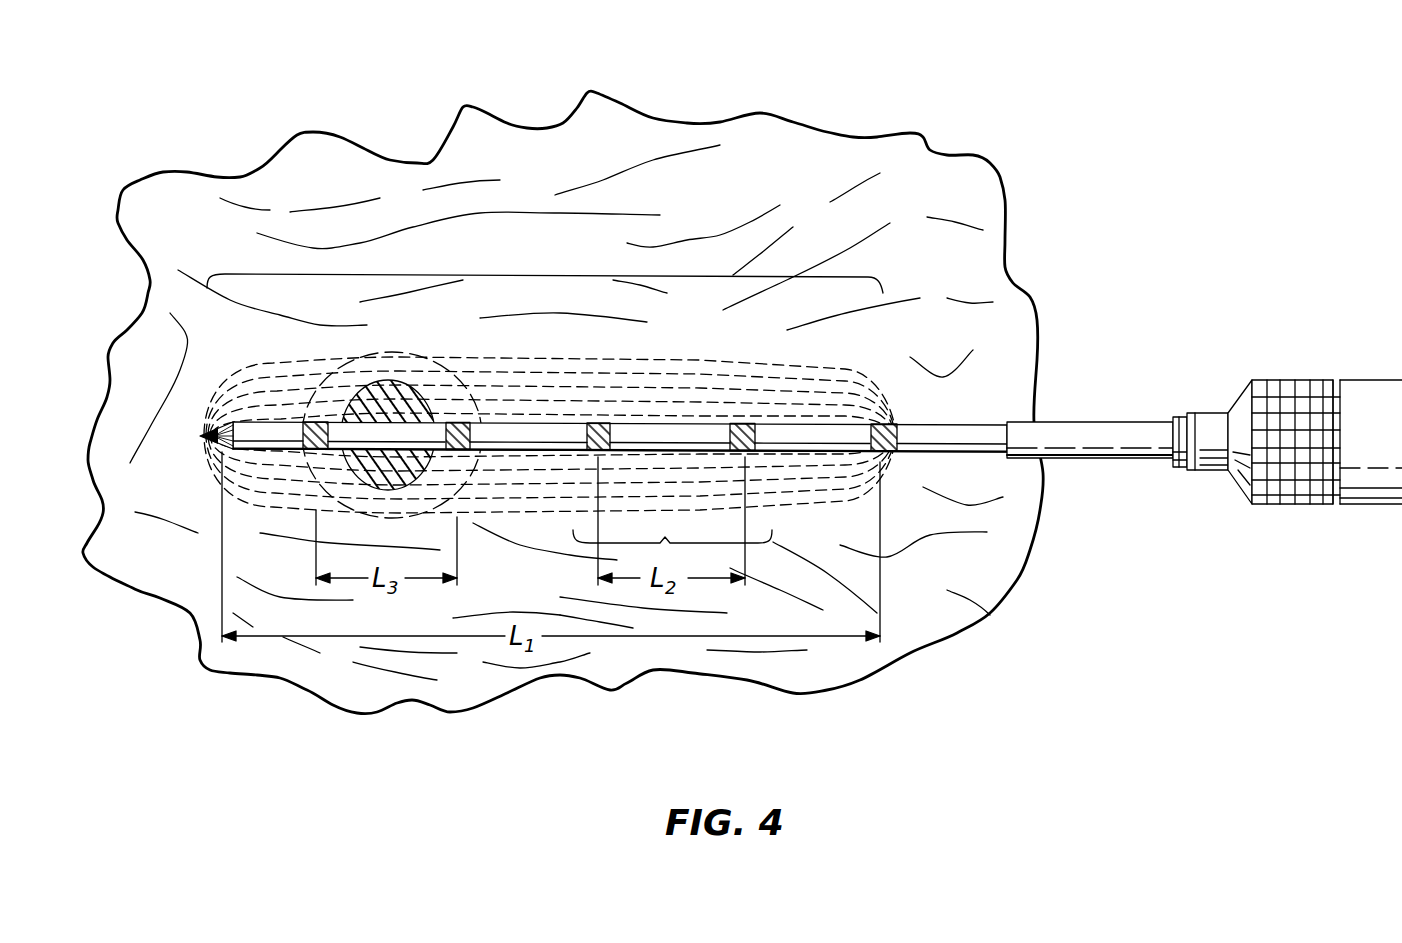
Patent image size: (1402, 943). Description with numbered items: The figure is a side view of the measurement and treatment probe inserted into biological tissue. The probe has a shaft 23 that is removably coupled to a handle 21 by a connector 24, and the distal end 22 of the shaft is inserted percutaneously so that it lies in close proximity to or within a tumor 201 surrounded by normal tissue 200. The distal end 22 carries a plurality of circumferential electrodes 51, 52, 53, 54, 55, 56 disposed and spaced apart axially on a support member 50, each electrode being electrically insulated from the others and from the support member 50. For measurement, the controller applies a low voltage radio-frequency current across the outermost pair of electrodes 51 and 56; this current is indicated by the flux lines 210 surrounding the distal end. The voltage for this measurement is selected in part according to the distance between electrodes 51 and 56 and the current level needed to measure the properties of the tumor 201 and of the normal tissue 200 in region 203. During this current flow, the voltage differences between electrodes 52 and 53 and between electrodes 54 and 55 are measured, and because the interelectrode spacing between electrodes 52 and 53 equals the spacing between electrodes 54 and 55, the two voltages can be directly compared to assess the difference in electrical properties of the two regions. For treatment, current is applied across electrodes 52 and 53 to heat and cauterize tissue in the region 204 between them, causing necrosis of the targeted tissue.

The handle 21 is at (1380, 507).
The distal end 22 is at (544, 275).
The shaft 23 is at (1130, 460).
The connector 24 is at (1285, 388).
The support member 50 is at (980, 430).
The electrode 51 is at (203, 438).
The electrode 52 is at (300, 422).
The electrode 53 is at (458, 422).
The electrode 54 is at (592, 423).
The electrode 55 is at (730, 423).
The electrode 56 is at (915, 425).
The normal tissue 200 is at (990, 615).
The tumor 201 is at (362, 476).
The region 203 is at (667, 545).
The region 204 is at (372, 356).
The flux lines 210 is at (675, 413).